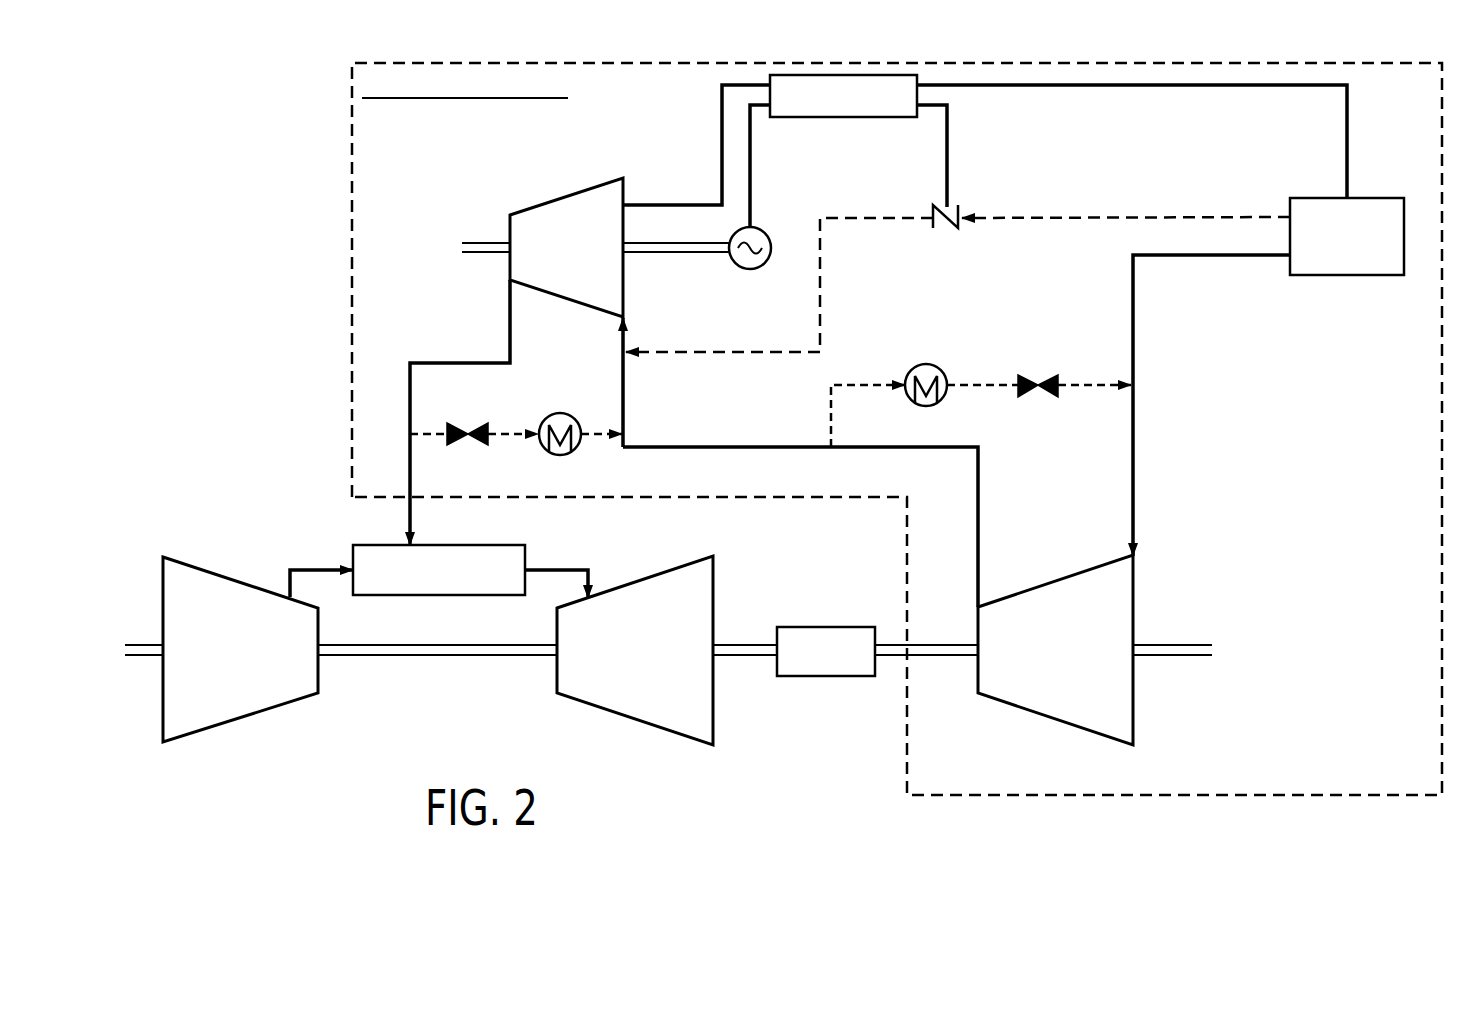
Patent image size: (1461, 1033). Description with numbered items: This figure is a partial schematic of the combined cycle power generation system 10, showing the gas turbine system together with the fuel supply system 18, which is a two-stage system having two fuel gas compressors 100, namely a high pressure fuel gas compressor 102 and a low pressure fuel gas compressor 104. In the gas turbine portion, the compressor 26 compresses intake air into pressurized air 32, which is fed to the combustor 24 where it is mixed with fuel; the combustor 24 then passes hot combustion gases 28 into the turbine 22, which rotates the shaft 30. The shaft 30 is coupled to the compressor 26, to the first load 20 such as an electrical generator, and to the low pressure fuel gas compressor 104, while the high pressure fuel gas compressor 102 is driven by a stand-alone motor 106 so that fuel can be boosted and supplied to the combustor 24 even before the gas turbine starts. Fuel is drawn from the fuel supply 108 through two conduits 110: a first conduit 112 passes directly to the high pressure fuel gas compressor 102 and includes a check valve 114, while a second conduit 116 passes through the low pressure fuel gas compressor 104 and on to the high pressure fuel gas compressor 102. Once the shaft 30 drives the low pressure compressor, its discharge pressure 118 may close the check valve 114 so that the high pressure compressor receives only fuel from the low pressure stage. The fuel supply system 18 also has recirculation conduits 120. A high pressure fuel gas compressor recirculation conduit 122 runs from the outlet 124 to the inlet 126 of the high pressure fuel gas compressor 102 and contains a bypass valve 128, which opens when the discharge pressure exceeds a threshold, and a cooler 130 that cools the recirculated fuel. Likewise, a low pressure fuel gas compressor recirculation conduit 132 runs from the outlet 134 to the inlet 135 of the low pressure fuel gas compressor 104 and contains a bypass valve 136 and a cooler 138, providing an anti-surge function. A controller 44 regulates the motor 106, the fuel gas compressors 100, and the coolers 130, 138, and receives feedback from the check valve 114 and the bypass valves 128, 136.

The combined cycle power generation system 10 is at (221, 322).
The fuel supply system 18 is at (350, 282).
The first load 20 is at (826, 627).
The turbine 22 is at (635, 719).
The combustor 24 is at (472, 545).
The compressor 26 is at (237, 720).
The combustion gases 28 is at (560, 568).
The shaft 30 is at (437, 657).
The pressurized air 32 is at (313, 568).
The controller 44 is at (843, 117).
The fuel gas compressors 100 is at (502, 181).
The high pressure fuel gas compressor 102 is at (566, 196).
The low pressure fuel gas compressor 104 is at (1135, 602).
The motor 106 is at (745, 270).
The fuel supply 108 is at (1370, 198).
The conduits 110 is at (1157, 250).
The first conduit 112 is at (822, 283).
The check valve 114 is at (965, 201).
The second conduit 116 is at (740, 450).
The discharge pressure 118 is at (687, 376).
The recirculation conduits 120 is at (418, 424).
The high pressure fuel gas compressor recirculation conduit 122 is at (427, 440).
The outlet 124 is at (466, 342).
The inlet 126 is at (600, 355).
The bypass valve 128 is at (459, 426).
The cooler 130 is at (560, 456).
The low pressure fuel gas compressor recirculation conduit 132 is at (992, 390).
The outlet 134 is at (926, 460).
The inlet 135 is at (1117, 513).
The bypass valve 136 is at (1027, 375).
The cooler 138 is at (923, 365).